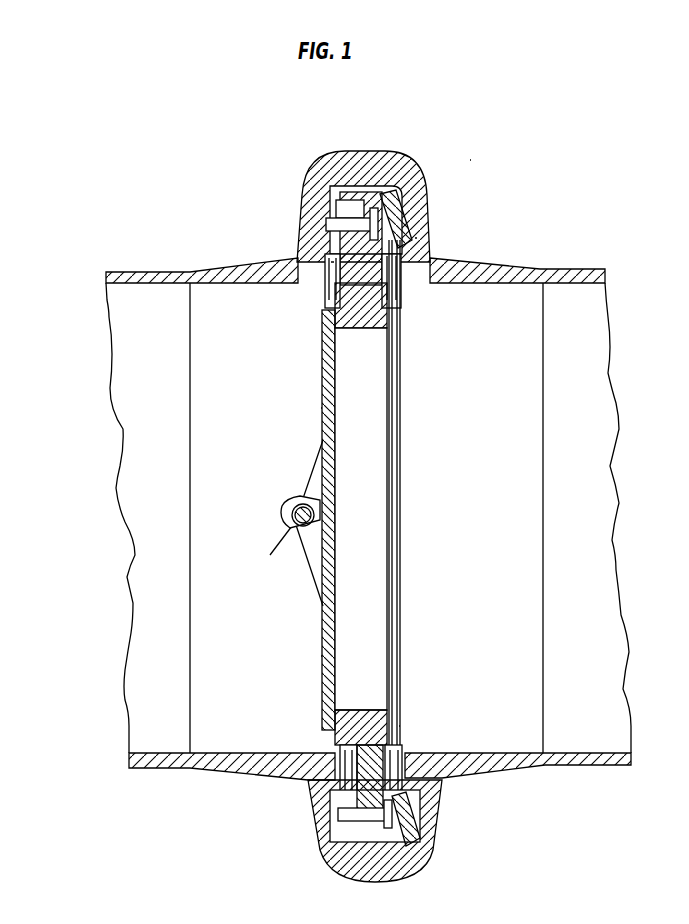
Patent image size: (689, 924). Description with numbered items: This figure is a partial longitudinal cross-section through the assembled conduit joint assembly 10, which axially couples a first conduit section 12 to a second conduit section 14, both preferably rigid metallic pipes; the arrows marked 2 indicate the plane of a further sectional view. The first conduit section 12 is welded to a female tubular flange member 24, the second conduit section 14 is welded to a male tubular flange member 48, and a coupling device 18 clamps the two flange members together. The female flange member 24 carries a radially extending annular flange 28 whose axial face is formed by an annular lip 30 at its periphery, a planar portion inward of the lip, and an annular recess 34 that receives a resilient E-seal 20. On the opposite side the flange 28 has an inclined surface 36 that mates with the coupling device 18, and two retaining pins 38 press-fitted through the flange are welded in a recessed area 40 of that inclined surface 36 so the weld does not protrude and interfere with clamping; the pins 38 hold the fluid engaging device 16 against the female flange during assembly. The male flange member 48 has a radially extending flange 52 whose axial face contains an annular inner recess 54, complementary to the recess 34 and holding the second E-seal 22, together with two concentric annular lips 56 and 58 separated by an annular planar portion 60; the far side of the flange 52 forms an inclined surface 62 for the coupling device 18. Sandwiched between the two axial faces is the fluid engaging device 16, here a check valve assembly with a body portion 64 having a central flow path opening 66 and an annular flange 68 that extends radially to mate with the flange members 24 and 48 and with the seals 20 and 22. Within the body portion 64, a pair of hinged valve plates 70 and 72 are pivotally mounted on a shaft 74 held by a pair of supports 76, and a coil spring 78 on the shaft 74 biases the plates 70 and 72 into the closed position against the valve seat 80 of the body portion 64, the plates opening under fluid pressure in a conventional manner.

The section line 2- 2 is at (210, 225).
The conduit joint assembly 10 is at (472, 158).
The first conduit section 12 is at (135, 270).
The second conduit section 14 is at (578, 268).
The fluid engaging device 16 is at (320, 360).
The coupling device 18 is at (377, 148).
The resilient E-seal 20 is at (326, 256).
The resilient E-seal 22 is at (418, 236).
The female tubular flange member 24 is at (220, 269).
The annular flange 28 is at (346, 184).
The annular lip 30 is at (355, 866).
The annular recess 34 is at (332, 294).
The inclined surface 36 is at (336, 210).
The retaining pin 38 is at (345, 227).
The recessed area 40 is at (345, 818).
The male tubular flange member 48 is at (470, 257).
The radially extending flange 52 is at (412, 192).
The annular inner recess 54 is at (400, 292).
The annular lip 56 is at (440, 772).
The annular lip 58 is at (405, 850).
The annular planar portion 60 is at (440, 816).
The inclined surface 62 is at (452, 284).
The body portion 64 is at (400, 726).
The central flow path opening 66 is at (372, 656).
The annular flange 68 is at (340, 736).
The hinged valve plate 70 is at (320, 408).
The hinged valve plate 72 is at (321, 656).
The shaft 74 is at (300, 532).
The support 76 is at (290, 517).
The coil spring 78 is at (310, 494).
The valve seat 80 is at (350, 712).